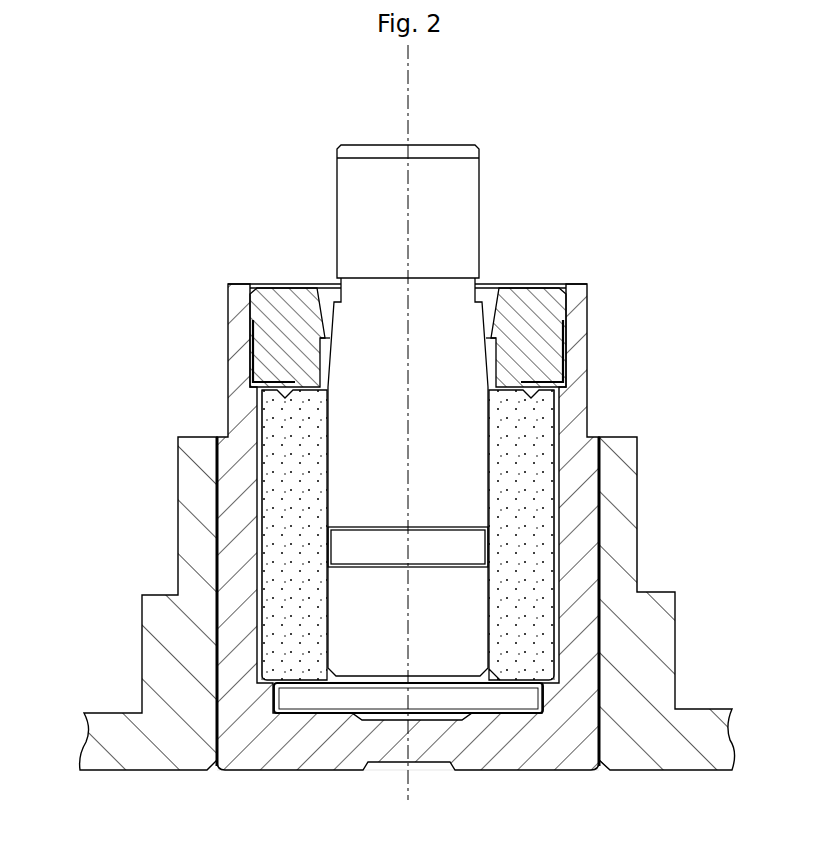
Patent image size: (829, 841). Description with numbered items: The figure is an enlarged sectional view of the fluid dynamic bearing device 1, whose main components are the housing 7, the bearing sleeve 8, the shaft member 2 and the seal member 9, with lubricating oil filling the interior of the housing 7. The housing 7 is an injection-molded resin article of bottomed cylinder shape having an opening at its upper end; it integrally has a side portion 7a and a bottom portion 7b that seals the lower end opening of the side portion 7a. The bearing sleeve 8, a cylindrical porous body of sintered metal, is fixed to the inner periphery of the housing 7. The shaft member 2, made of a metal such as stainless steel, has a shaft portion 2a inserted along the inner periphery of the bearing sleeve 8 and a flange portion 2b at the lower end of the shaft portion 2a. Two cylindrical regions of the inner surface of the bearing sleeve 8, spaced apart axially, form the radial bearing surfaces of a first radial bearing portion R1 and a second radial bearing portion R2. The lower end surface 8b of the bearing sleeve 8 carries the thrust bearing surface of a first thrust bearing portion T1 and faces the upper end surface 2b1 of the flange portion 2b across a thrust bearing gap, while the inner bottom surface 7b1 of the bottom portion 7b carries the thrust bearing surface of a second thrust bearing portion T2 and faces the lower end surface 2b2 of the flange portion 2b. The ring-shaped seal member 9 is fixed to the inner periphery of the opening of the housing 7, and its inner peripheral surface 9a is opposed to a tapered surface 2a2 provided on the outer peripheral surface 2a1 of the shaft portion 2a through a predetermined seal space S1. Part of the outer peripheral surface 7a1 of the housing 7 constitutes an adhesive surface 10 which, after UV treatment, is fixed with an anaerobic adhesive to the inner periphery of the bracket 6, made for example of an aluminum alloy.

The fluid dynamic bearing device 1 is at (582, 221).
The shaft member 2 is at (486, 198).
The shaft portion 2a is at (442, 170).
The outer peripheral surface of shaft portion 2a1 is at (497, 506).
The tapered surface 2a2 is at (489, 318).
The flange portion 2b is at (440, 705).
The upper end surface of flange portion 2b1 is at (514, 676).
The lower end surface of flange portion 2b2 is at (530, 718).
The bracket 6 is at (137, 632).
The housing 7 is at (224, 300).
The side portion 7a is at (235, 518).
The outer peripheral surface of housing 7a1 is at (603, 470).
The bottom portion 7b is at (352, 755).
The inner bottom surface 7b1 is at (343, 713).
The bearing sleeve 8 is at (540, 413).
The lower end surface of bearing sleeve 8b is at (292, 686).
The seal member 9 is at (283, 296).
The inner peripheral surface of seal member 9a is at (493, 316).
The adhesive surface 10 is at (606, 552).
The first radial bearing portion R1 is at (318, 467).
The second radial bearing portion R2 is at (318, 625).
The seal space S1 is at (325, 326).
The first thrust bearing portion T1 is at (492, 664).
The second thrust bearing portion T2 is at (509, 722).